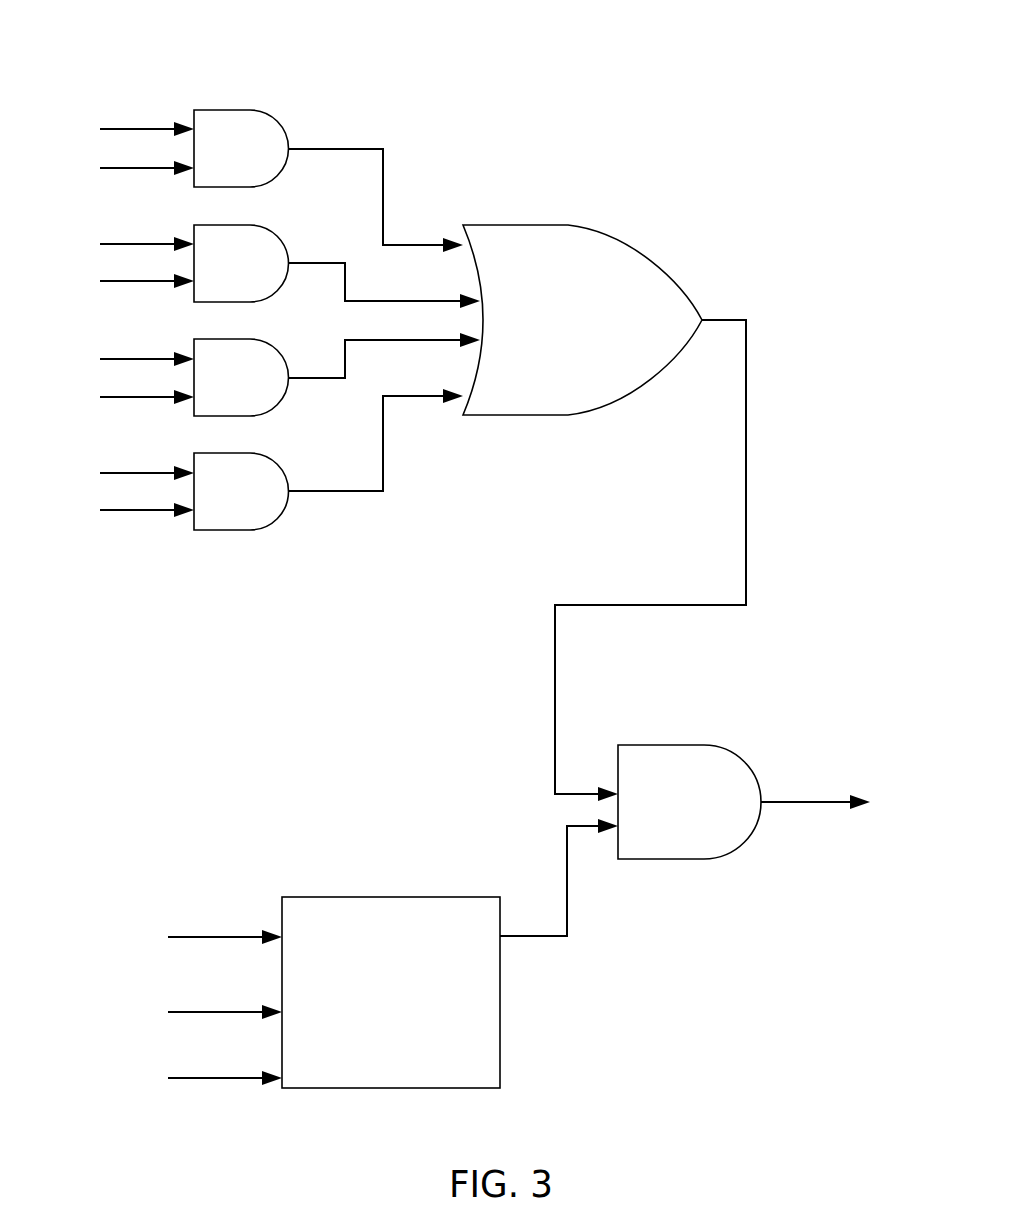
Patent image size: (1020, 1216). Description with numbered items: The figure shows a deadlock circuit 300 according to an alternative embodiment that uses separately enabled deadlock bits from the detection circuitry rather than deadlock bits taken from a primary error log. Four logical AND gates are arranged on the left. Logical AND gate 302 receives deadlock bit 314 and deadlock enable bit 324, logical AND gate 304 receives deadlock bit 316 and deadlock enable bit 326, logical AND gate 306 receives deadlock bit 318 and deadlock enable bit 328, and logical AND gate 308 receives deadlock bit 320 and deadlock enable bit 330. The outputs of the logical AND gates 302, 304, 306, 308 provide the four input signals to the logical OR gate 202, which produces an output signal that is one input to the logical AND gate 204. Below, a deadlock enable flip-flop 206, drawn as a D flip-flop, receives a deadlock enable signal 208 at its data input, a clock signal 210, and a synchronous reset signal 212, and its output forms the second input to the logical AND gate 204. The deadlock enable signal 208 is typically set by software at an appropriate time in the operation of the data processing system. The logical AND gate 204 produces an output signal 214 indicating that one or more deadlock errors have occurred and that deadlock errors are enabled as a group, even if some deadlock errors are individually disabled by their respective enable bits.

The deadlock circuit 300 is at (577, 36).
The logical AND gate 302 is at (279, 119).
The logical AND gate 304 is at (290, 254).
The logical AND gate 306 is at (287, 368).
The logical AND gate 308 is at (290, 483).
The logical OR gate 202 is at (643, 256).
The logical AND gate 204 is at (717, 745).
The deadlock enable flip-flop 206 is at (417, 897).
The deadlock enable signal 208 is at (200, 937).
The clock signal 210 is at (200, 1012).
The synchronous reset signal 212 is at (200, 1075).
The output signal 214 is at (840, 793).
The deadlock bit 314 is at (122, 160).
The deadlock bit 316 is at (122, 280).
The deadlock bit 318 is at (122, 400).
The deadlock bit 320 is at (122, 514).
The deadlock enable bit 324 is at (122, 120).
The deadlock enable bit 326 is at (122, 236).
The deadlock enable bit 328 is at (122, 360).
The deadlock enable bit 330 is at (122, 474).